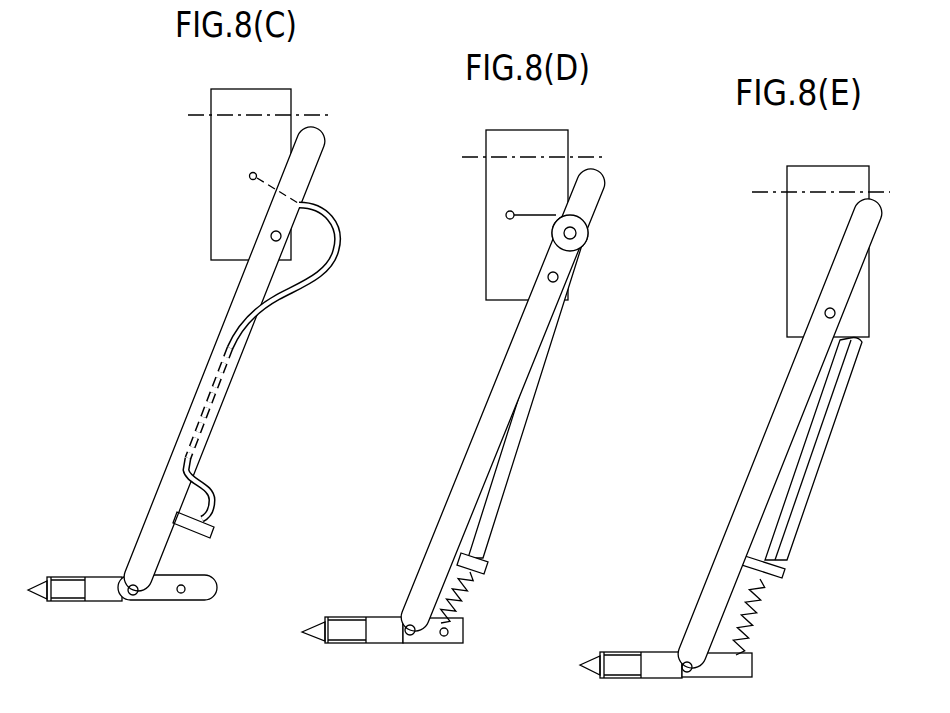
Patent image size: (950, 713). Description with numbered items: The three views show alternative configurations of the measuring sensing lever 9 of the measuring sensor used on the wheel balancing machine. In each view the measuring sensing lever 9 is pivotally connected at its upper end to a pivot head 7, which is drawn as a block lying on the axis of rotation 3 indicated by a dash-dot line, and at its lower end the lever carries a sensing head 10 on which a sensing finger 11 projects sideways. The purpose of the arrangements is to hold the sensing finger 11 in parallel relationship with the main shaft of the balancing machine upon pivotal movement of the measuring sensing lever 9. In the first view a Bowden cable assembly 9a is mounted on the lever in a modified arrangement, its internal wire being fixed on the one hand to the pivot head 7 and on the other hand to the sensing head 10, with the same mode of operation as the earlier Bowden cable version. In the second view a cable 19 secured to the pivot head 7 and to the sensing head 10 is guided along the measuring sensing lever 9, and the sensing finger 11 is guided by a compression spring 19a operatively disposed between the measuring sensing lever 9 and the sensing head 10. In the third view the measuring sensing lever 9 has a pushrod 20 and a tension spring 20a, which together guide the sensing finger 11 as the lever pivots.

In FIG. 8C, the axis of rotation 3 is at (210, 115).
In FIG. 8D, the axis of rotation 3 is at (475, 157).
In FIG. 8E, the axis of rotation 3 is at (770, 192).
In FIG. 8C, the pivot head 7 is at (229, 97).
In FIG. 8D, the pivot head 7 is at (508, 140).
In FIG. 8E, the pivot head 7 is at (835, 175).
In FIG. 8C, the measuring sensing lever 9 is at (313, 173).
In FIG. 8D, the measuring sensing lever 9 is at (497, 392).
In FIG. 8E, the measuring sensing lever 9 is at (752, 484).
In FIG. 8C, the Bowden cable assembly 9a is at (207, 497).
In FIG. 8C, the sensing head 10 is at (167, 592).
In FIG. 8D, the sensing head 10 is at (432, 636).
In FIG. 8E, the sensing head 10 is at (740, 668).
In FIG. 8C, the sensing finger 11 is at (64, 583).
In FIG. 8D, the sensing finger 11 is at (336, 623).
In FIG. 8E, the sensing finger 11 is at (617, 663).
In FIG. 8D, the cable 19 is at (540, 373).
In FIG. 8D, the compression spring 19a is at (462, 597).
In FIG. 8E, the pushrod 20 is at (815, 462).
In FIG. 8E, the tension spring 20a is at (755, 610).